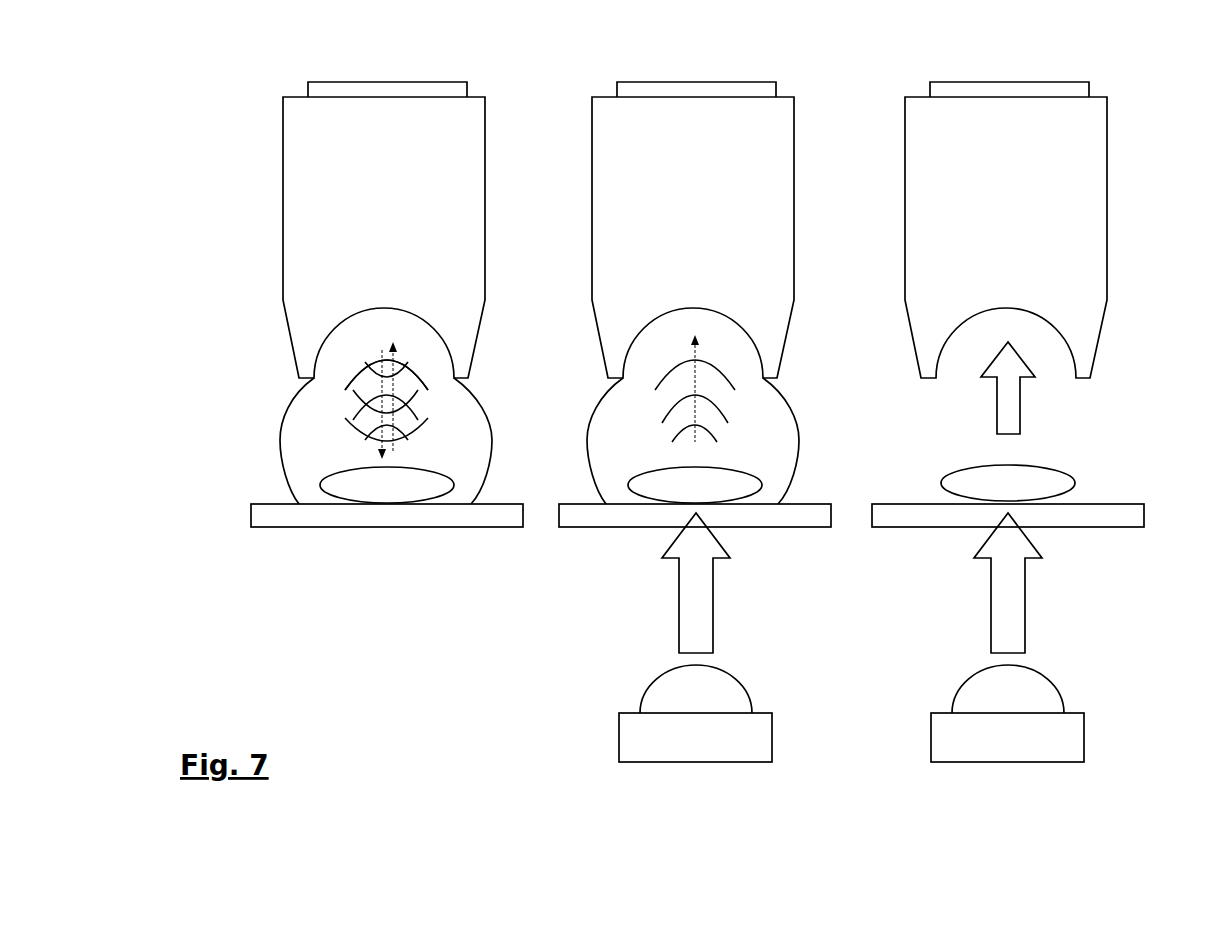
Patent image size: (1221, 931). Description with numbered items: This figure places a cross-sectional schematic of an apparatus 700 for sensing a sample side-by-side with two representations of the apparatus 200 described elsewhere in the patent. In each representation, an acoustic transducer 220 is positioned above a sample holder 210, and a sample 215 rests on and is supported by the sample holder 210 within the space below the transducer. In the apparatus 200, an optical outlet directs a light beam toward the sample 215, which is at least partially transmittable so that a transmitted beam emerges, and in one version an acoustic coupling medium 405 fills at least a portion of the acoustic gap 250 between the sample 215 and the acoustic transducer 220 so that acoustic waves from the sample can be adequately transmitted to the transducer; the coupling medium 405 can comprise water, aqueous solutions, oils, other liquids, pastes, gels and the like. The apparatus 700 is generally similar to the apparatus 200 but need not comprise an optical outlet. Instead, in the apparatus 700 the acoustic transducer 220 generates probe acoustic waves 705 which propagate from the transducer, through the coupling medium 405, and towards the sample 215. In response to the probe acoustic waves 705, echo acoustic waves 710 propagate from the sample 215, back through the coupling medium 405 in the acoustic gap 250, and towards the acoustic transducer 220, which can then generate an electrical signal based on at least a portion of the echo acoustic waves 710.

The apparatus for sensing a sample 700 is at (504, 96).
The apparatus 200 is at (815, 96).
The acoustic transducer 220 is at (283, 186).
The acoustic coupling medium 405 is at (290, 402).
The probe acoustic waves 705 is at (353, 435).
The echo acoustic waves 710 is at (428, 388).
The acoustic gap 250 is at (441, 452).
The sample 215 is at (321, 485).
The sample holder 210 is at (270, 528).